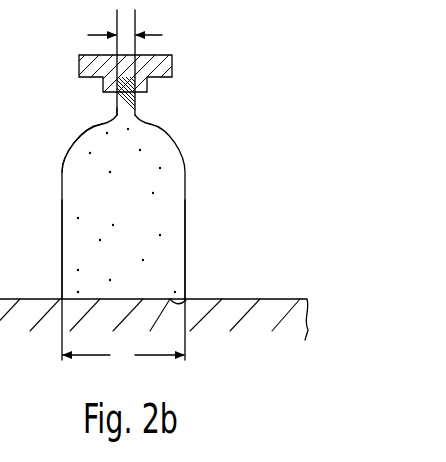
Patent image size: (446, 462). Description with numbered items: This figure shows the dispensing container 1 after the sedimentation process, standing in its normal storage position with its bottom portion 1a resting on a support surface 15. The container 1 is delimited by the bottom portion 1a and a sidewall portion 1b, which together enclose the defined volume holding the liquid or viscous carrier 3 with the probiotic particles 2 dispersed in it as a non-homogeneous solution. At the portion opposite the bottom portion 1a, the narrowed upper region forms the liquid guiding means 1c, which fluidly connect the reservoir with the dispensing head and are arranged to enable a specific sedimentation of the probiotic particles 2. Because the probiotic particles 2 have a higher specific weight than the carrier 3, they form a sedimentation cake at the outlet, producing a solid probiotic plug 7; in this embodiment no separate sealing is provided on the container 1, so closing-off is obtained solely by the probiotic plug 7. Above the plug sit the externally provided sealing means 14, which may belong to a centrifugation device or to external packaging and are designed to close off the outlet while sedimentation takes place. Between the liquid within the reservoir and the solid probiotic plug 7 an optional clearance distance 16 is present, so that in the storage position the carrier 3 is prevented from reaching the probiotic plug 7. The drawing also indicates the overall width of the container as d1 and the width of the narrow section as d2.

The dispensing container 1 is at (200, 186).
The bottom portion 1a is at (187, 303).
The sidewall portion 1b is at (187, 248).
The liquid guiding means 1c is at (163, 137).
The probiotic particles 2 is at (80, 183).
The liquid or viscous carrier 3 is at (80, 242).
The probiotic plug 7 is at (117, 110).
The sealing means 14 is at (168, 62).
The support surface 15 is at (268, 345).
The clearance distance 16 is at (137, 113).
The container diameter d1 is at (123, 333).
The rod diameter d2 is at (125, 31).